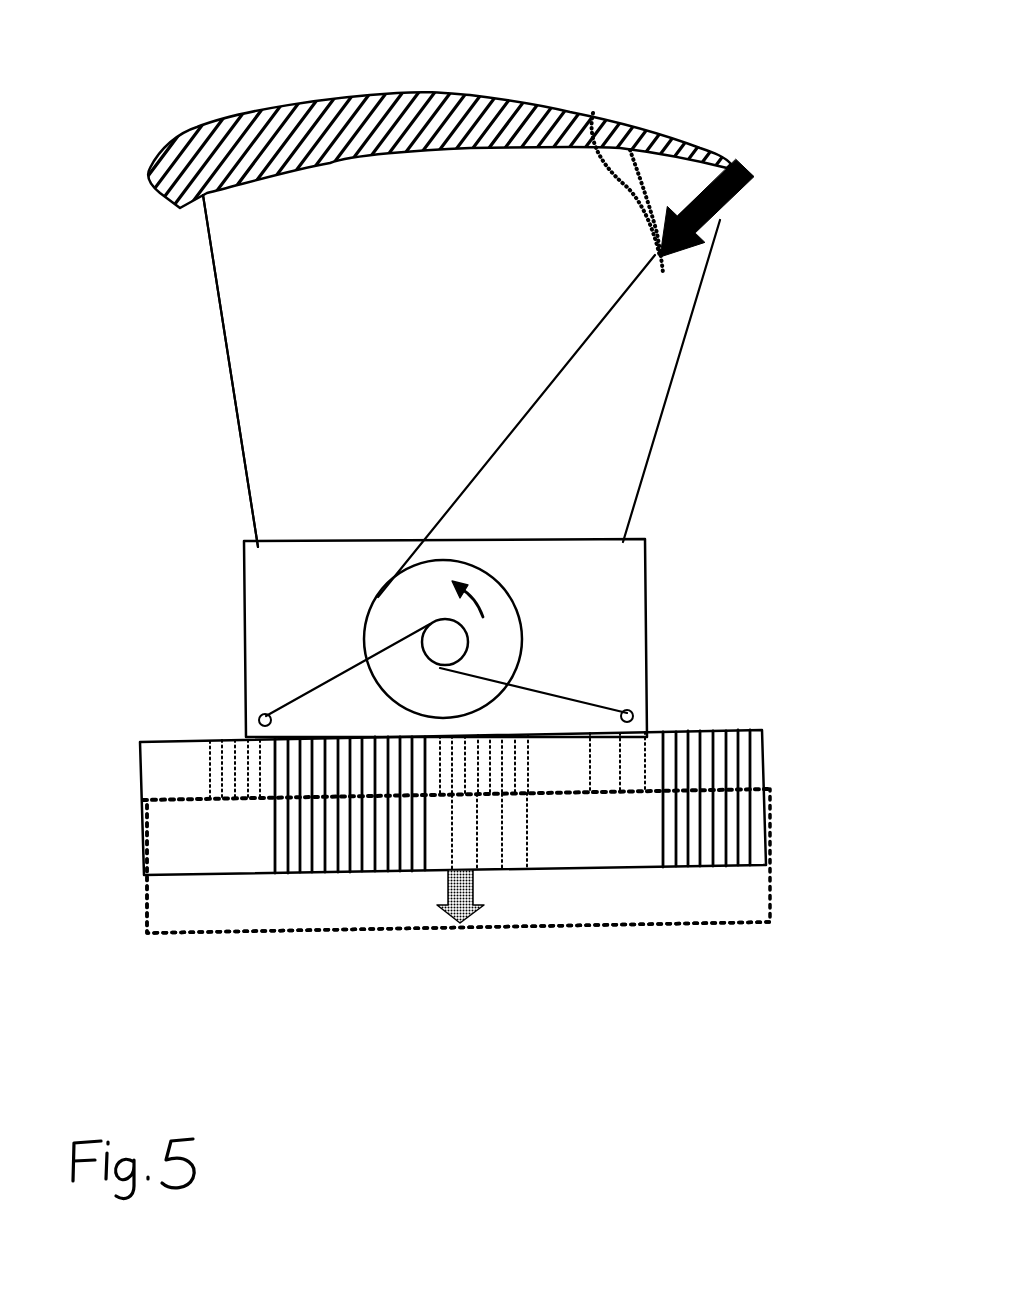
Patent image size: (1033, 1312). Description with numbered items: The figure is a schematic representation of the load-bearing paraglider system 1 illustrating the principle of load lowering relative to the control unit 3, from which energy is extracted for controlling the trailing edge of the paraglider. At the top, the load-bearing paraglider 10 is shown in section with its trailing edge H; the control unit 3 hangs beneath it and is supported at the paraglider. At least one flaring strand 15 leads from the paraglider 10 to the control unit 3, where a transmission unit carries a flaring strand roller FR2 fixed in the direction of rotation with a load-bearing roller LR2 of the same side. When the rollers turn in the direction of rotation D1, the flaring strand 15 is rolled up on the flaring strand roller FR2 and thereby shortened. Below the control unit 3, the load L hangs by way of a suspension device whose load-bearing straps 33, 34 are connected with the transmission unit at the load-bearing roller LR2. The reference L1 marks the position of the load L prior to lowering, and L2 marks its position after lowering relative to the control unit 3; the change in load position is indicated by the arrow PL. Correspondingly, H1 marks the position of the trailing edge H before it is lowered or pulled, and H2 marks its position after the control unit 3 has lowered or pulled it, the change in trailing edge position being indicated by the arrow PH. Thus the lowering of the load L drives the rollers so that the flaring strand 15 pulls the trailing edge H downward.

The load-bearing paraglider system 1 is at (180, 442).
The control unit 3 is at (637, 580).
The load-bearing paraglider 10 is at (375, 152).
The flaring strand 15 is at (547, 392).
The load-bearing strap 33 is at (520, 690).
The load-bearing strap 34 is at (310, 687).
The trailing edge H is at (725, 126).
The position of the trailing edge before lowering H1 is at (657, 141).
The position of the trailing edge after lowering H2 is at (628, 187).
The arrow indicating change in trailing edge position PH is at (713, 208).
The direction of rotation D1 is at (447, 598).
The flaring strand roller FR2 is at (503, 612).
The load-bearing roller LR2 is at (458, 647).
The load L is at (108, 848).
The position of the load prior to lowering L1 is at (757, 750).
The position of the load after lowering L2 is at (700, 913).
The arrow indicating change in load position PL is at (488, 896).